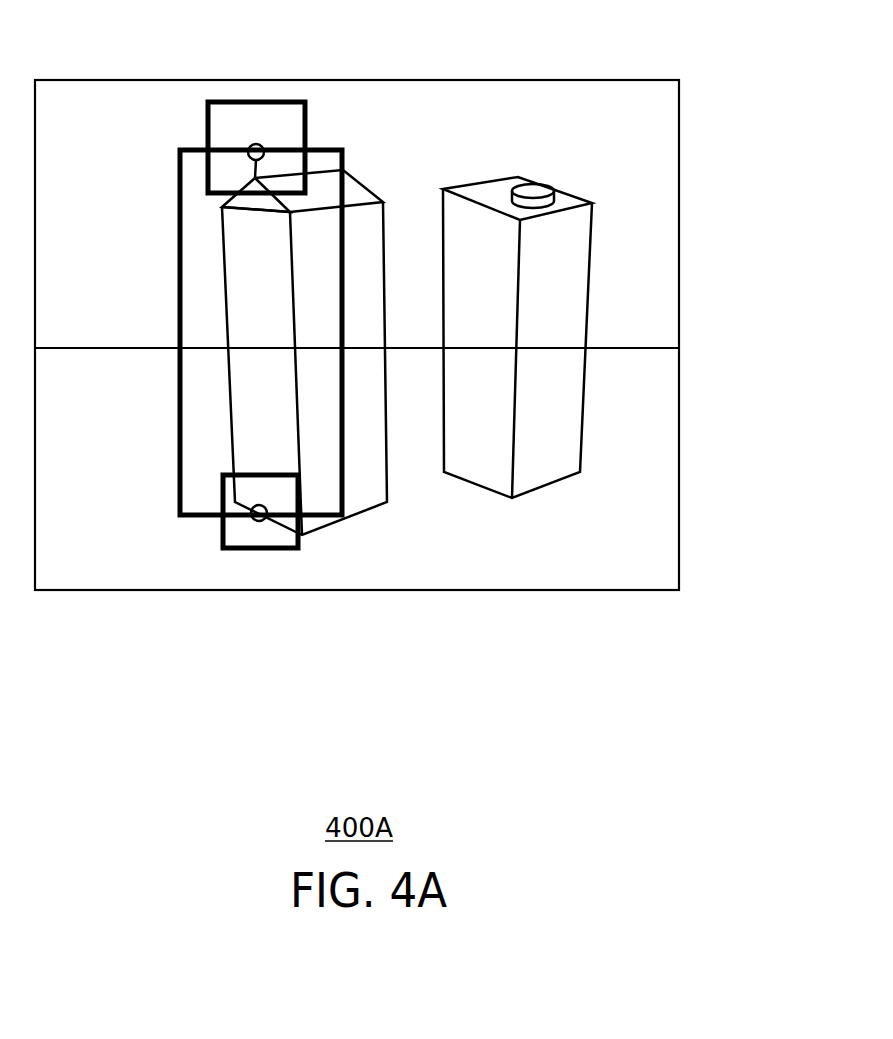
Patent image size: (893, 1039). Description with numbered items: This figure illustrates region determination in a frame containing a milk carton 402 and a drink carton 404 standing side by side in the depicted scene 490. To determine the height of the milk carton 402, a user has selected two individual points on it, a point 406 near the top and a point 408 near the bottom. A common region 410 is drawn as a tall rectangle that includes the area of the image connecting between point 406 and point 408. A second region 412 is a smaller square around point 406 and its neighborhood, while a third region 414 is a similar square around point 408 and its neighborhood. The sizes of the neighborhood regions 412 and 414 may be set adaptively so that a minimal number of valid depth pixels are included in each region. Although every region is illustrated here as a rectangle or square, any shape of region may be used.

The milk carton 402 is at (365, 183).
The drink carton 404 is at (530, 493).
The point 406 is at (257, 143).
The point 408 is at (259, 522).
The common region 410 is at (178, 443).
The second region 412 is at (208, 120).
The third region 414 is at (223, 533).
The shelf environment view 490 is at (645, 407).